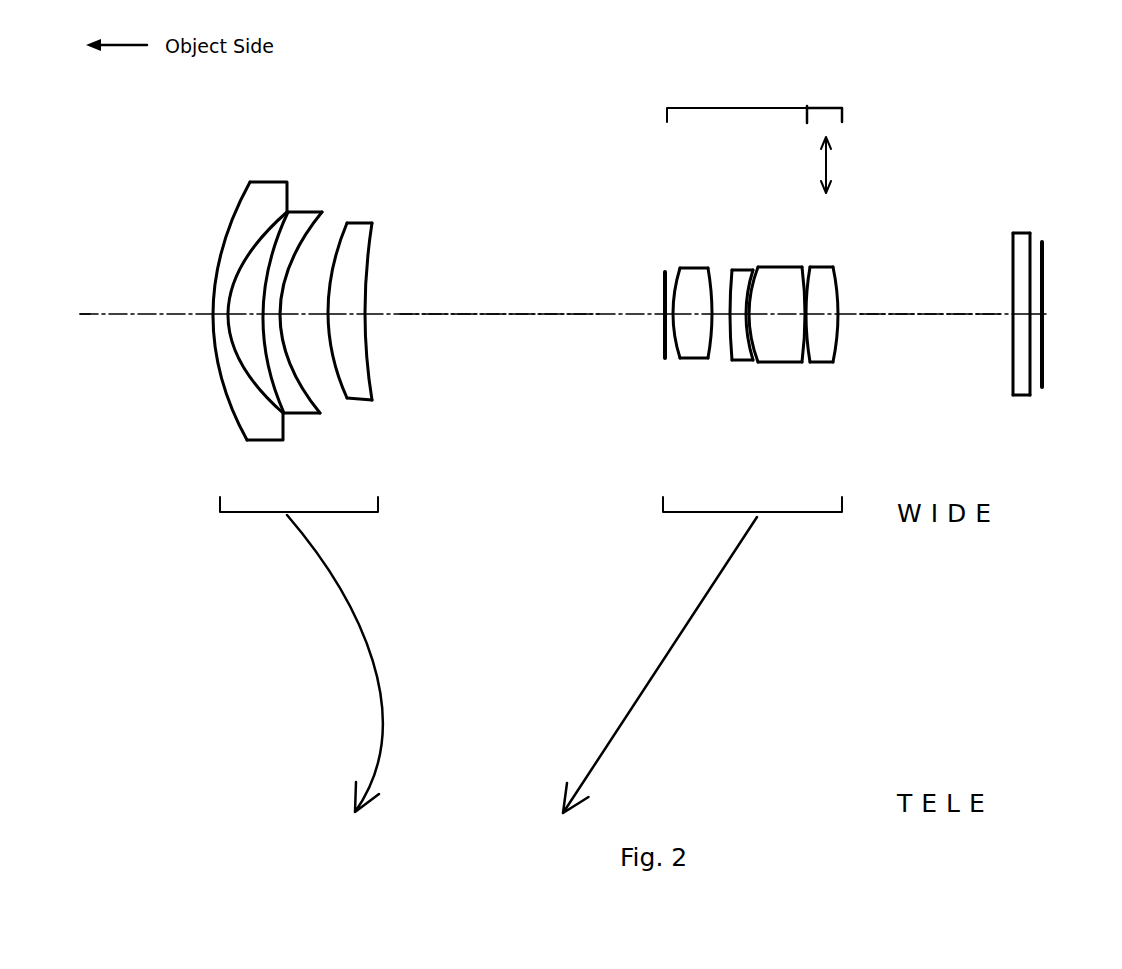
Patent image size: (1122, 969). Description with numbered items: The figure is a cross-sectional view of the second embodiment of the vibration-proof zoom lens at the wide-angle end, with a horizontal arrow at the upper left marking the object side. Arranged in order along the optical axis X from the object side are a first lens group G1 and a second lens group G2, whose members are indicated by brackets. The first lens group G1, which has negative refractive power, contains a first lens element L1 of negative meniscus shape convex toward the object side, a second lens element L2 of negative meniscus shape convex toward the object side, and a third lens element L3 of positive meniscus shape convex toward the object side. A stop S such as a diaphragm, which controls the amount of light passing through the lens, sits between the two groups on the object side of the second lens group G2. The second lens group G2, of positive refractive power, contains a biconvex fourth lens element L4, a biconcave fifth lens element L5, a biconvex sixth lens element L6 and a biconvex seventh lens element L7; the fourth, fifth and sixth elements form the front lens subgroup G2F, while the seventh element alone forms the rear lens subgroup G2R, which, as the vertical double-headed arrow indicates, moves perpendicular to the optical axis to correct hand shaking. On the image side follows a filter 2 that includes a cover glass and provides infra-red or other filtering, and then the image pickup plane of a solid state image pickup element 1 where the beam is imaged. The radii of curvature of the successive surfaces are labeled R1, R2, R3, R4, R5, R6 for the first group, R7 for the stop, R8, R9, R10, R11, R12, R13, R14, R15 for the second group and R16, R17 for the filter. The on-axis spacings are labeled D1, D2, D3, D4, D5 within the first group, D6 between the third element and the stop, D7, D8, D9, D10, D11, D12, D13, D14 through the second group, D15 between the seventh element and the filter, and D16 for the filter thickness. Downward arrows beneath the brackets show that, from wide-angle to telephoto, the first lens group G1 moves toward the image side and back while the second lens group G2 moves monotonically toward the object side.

The optical axis X is at (105, 317).
The first lens group G1 is at (304, 451).
The second lens group G2 is at (728, 440).
The first lens subgroup G2F is at (737, 95).
The second lens subgroup G2R is at (825, 130).
The first lens element L1 is at (249, 265).
The second lens element L2 is at (281, 267).
The third lens element L3 is at (366, 265).
The fourth lens element L4 is at (688, 255).
The fifth lens element L5 is at (741, 257).
The sixth lens element L6 is at (780, 262).
The seventh lens element L7 is at (849, 276).
The stop S is at (663, 265).
The radius of curvature of first surface R1 is at (230, 220).
The radius of curvature of second surface R2 is at (268, 213).
The radius of curvature of third surface R3 is at (264, 299).
The radius of curvature of fourth surface R4 is at (283, 313).
The radius of curvature of fifth surface R5 is at (338, 250).
The radius of curvature of sixth surface R6 is at (375, 273).
The radius of curvature of seventh surface R7 is at (662, 305).
The radius of curvature of eighth surface R8 is at (676, 270).
The radius of curvature of ninth surface R9 is at (710, 268).
The radius of curvature of tenth surface R10 is at (732, 280).
The radius of curvature of eleventh surface R11 is at (750, 268).
The radius of curvature of twelfth surface R12 is at (758, 276).
The radius of curvature of thirteenth surface R13 is at (798, 268).
The radius of curvature of fourteenth surface R14 is at (834, 268).
The radius of curvature of fifteenth surface R15 is at (840, 314).
The radius of curvature of sixteenth surface R16 is at (1013, 267).
The radius of curvature of seventeenth surface R17 is at (1038, 233).
The on-axis surface spacing D1 is at (236, 412).
The on-axis surface spacing D2 is at (250, 432).
The on-axis surface spacing D3 is at (300, 412).
The on-axis surface spacing D4 is at (323, 412).
The on-axis surface spacing D5 is at (360, 408).
The on-axis surface spacing D6 is at (477, 316).
The on-axis surface spacing D7 is at (667, 360).
The on-axis surface spacing D8 is at (690, 362).
The on-axis surface spacing D9 is at (722, 362).
The on-axis surface spacing D10 is at (742, 362).
The on-axis surface spacing D11 is at (766, 364).
The on-axis surface spacing D12 is at (781, 364).
The on-axis surface spacing D13 is at (811, 364).
The on-axis surface spacing D14 is at (828, 364).
The on-axis surface spacing D15 is at (932, 316).
The on-axis surface spacing D16 is at (1020, 396).
The image pickup plane of solid state image pickup element 1 is at (1043, 242).
The filter 2 is at (1013, 270).